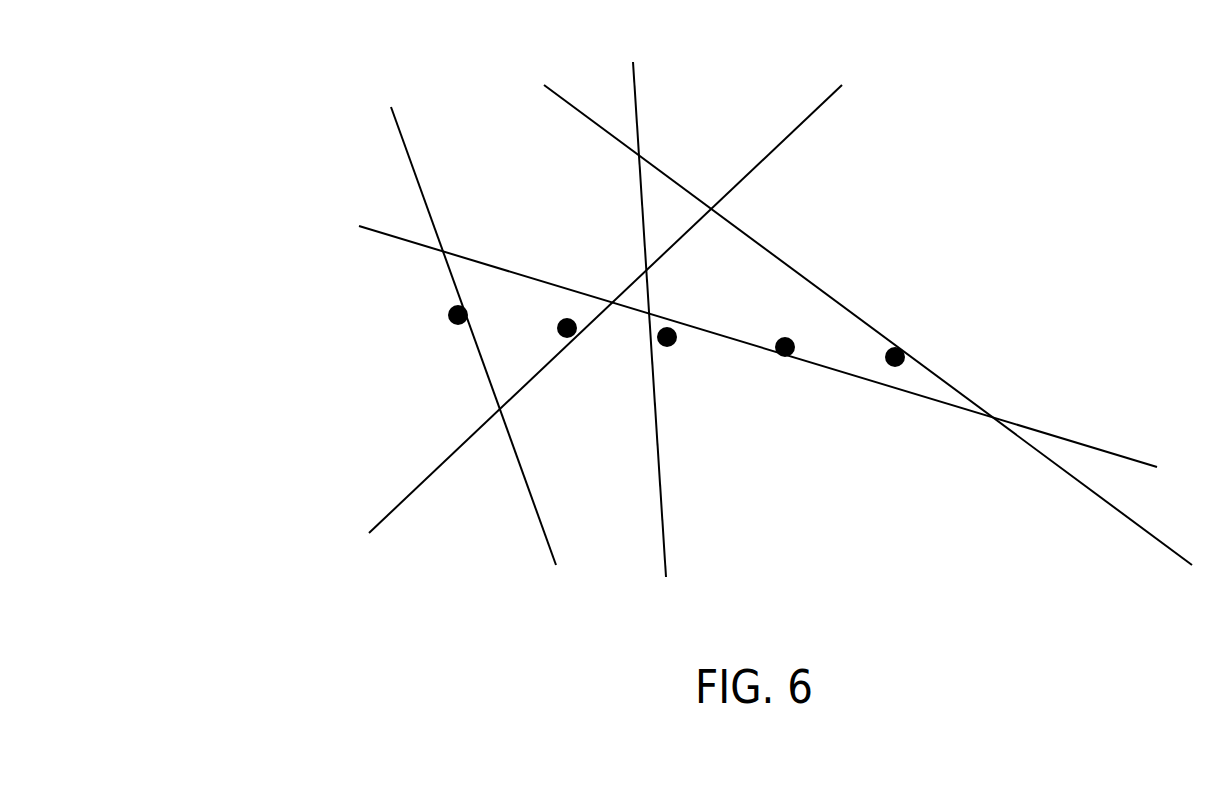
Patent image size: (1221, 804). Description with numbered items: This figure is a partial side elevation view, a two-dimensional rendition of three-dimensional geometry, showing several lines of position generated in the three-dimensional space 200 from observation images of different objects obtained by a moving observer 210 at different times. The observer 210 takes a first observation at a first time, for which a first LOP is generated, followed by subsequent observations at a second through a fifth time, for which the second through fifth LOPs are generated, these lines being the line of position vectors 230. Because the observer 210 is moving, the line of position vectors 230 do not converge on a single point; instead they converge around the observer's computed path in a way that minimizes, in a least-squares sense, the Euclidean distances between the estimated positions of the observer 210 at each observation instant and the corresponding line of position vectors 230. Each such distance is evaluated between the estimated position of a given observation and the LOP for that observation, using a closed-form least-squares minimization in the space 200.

The three-dimensional space 200 is at (256, 29).
The observer 210 is at (448, 319).
The line of position vectors 230 is at (1171, 484).